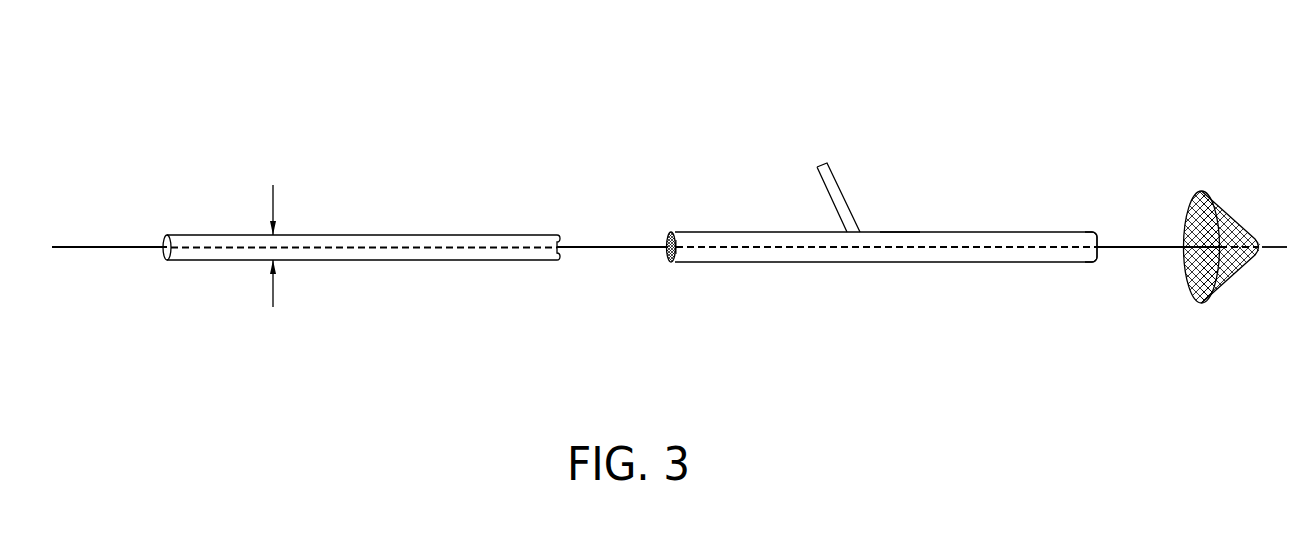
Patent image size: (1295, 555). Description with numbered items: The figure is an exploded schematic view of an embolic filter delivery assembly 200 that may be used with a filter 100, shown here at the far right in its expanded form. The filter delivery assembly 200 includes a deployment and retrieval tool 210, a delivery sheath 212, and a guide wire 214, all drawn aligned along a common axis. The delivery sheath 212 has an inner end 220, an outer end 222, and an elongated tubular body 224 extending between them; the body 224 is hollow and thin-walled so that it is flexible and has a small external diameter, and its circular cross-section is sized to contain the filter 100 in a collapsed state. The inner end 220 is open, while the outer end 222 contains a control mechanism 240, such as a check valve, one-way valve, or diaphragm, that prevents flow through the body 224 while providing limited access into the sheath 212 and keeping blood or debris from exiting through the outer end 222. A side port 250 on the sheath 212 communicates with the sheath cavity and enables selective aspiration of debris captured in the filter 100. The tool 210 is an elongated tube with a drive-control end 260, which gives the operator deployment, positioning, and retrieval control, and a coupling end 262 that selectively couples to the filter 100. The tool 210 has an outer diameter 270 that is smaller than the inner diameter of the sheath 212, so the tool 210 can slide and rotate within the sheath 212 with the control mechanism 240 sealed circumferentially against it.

The filter 100 is at (1228, 212).
The embolic filter delivery assembly 200 is at (605, 112).
The deployment and retrieval tool 210 is at (395, 235).
The delivery sheath 212 is at (880, 263).
The guide wire 214 is at (110, 247).
The inner end 220 is at (1100, 240).
The outer end 222 is at (668, 256).
The elongated tubular body 224 is at (897, 232).
The control mechanism 240 is at (676, 242).
The side port 250 is at (841, 178).
The drive-control end 260 is at (165, 243).
The coupling end 262 is at (558, 235).
The outer diameter 270 is at (274, 186).